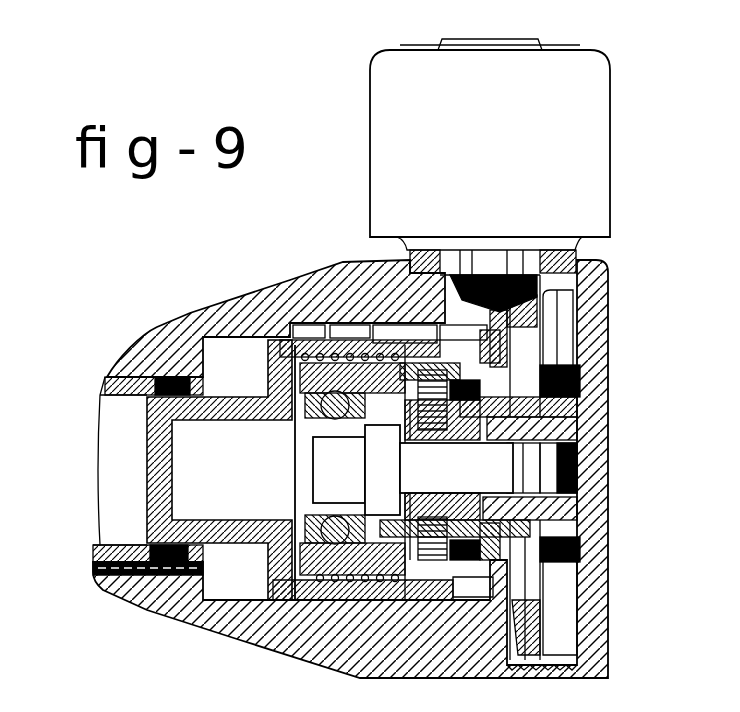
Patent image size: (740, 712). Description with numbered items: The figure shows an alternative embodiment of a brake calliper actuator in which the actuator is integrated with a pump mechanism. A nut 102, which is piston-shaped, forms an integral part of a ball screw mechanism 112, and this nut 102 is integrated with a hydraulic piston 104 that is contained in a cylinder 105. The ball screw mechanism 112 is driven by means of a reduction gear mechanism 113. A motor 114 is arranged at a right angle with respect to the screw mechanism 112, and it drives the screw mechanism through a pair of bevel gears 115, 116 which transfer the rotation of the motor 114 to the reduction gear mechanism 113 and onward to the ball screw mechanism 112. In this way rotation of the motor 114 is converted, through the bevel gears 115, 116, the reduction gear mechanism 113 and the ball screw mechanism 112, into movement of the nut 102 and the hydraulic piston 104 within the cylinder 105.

The nut 102 is at (340, 580).
The hydraulic piston 104 is at (217, 400).
The cylinder 105 is at (108, 440).
The ball screw mechanism 112 is at (328, 337).
The reduction gear mechanism 113 is at (453, 600).
The motor 114 is at (590, 145).
The bevel gear 115 is at (538, 303).
The bevel gear 116 is at (542, 638).